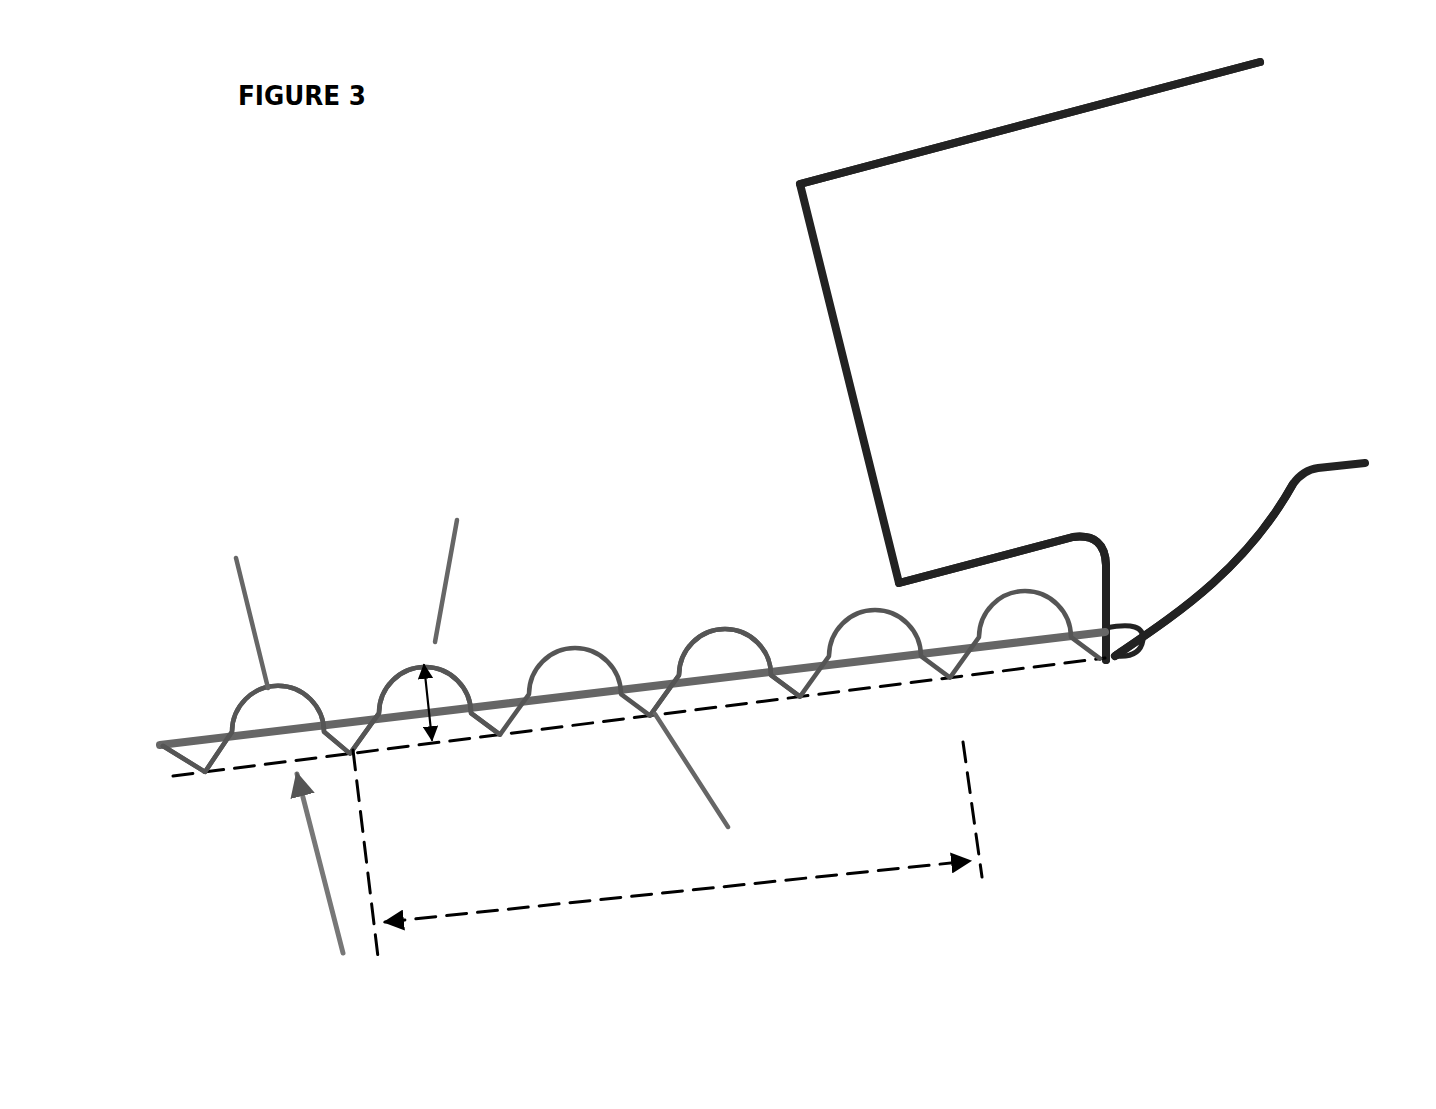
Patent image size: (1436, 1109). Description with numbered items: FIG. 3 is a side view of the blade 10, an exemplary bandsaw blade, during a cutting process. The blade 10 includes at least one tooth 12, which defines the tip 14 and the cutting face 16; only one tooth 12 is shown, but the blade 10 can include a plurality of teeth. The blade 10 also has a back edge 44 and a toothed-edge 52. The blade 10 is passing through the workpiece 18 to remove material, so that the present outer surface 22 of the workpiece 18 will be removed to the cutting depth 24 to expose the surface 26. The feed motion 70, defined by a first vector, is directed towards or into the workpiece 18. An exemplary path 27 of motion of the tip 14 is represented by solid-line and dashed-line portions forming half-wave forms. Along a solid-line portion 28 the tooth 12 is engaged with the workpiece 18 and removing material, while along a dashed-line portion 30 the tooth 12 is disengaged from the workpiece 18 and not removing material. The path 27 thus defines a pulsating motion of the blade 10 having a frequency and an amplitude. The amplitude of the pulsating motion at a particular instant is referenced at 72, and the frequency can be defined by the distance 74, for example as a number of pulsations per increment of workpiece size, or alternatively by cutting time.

The blade 10 is at (795, 167).
The tooth 12 is at (1168, 582).
The tip 14 is at (1112, 662).
The cutting face 16 is at (1100, 577).
The workpiece 18 is at (639, 727).
The present outer surface 22 is at (580, 688).
The cutting depth 24 is at (240, 608).
The surface 26 is at (489, 748).
The path 27 is at (440, 400).
The solid-line portion 28 is at (707, 784).
The dashed-line portion 30 is at (457, 560).
The back edge 44 is at (932, 155).
The toothed-edge 52 is at (1276, 724).
The feed motion 70 is at (717, 456).
The amplitude 72 is at (425, 690).
The distance 74 is at (683, 895).